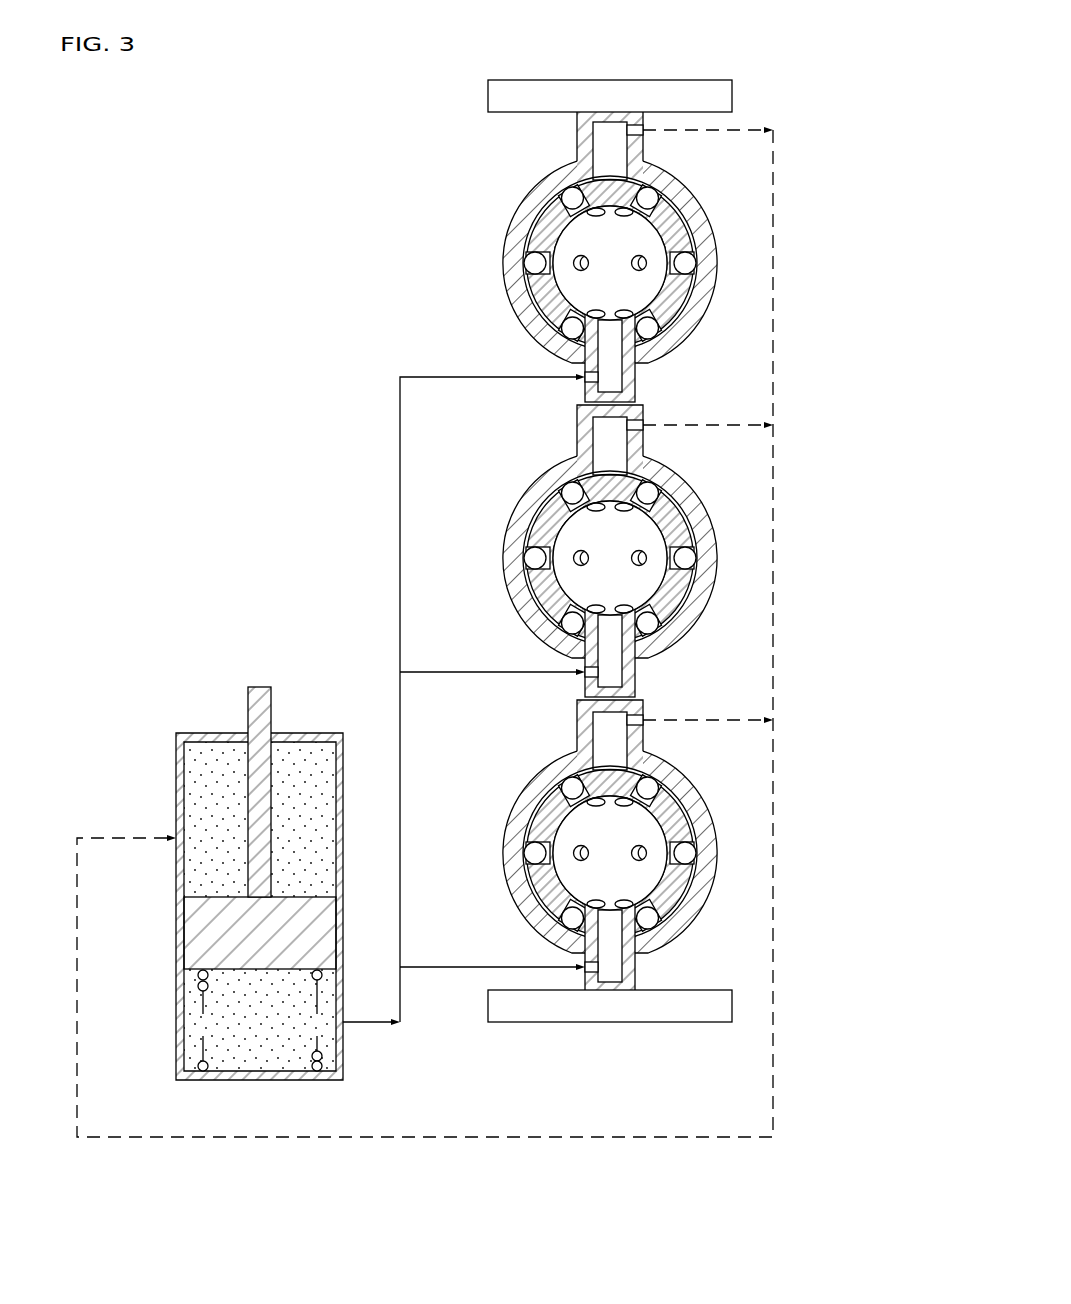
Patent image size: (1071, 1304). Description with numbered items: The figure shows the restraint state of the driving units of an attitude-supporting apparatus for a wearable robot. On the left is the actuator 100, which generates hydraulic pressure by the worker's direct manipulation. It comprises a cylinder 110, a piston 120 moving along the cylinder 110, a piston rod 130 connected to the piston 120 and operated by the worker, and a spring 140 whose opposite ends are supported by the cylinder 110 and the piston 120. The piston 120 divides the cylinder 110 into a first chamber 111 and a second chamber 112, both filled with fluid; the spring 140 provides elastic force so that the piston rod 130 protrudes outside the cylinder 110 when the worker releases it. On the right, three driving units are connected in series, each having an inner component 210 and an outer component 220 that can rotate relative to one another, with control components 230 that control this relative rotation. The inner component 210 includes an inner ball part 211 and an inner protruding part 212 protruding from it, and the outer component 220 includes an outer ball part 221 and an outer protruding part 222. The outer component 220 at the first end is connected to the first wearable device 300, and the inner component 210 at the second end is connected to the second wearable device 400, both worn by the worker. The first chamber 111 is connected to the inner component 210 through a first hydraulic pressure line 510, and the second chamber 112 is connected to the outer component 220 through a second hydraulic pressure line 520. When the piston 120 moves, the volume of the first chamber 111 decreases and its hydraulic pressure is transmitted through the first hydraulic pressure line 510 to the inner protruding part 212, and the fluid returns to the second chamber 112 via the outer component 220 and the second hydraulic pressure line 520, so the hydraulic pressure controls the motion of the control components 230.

The actuator 100 is at (247, 837).
The cylinder 110 is at (180, 806).
The first chamber 111 is at (190, 1054).
The second chamber 112 is at (203, 779).
The piston 120 is at (203, 937).
The piston rod 130 is at (255, 703).
The spring 140 is at (322, 1057).
The inner component 210 is at (545, 881).
The inner ball part 211 is at (553, 818).
The inner protruding part 212 is at (637, 972).
The outer component 220 is at (725, 809).
The outer ball part 221 is at (713, 847).
The outer protruding part 222 is at (582, 732).
The control components 230 is at (537, 853).
The first wearable device 300 is at (488, 97).
The second wearable device 400 is at (612, 1022).
The first hydraulic pressure line 510 is at (400, 568).
The second hydraulic pressure line 520 is at (773, 620).